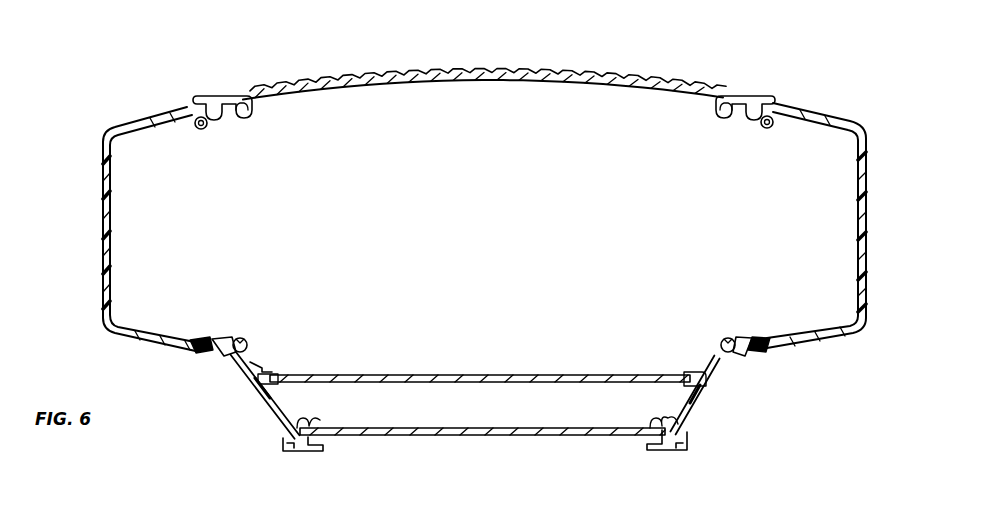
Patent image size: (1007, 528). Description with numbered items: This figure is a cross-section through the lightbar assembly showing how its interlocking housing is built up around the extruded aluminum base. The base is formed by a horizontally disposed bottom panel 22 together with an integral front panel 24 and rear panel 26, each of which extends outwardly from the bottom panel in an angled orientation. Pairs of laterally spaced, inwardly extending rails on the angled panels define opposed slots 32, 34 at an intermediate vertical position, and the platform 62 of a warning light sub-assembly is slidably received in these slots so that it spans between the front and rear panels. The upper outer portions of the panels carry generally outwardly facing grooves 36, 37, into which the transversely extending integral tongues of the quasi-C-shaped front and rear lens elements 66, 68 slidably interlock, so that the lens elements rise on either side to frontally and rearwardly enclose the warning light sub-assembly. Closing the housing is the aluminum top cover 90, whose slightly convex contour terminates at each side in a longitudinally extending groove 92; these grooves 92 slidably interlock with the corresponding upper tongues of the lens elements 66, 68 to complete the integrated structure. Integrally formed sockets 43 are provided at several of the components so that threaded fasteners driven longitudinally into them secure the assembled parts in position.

The bottom panel 22 is at (540, 436).
The front panel 24 is at (700, 403).
The rear panel 26 is at (276, 398).
The slot 32 is at (690, 373).
The slot 34 is at (285, 375).
The groove 36 is at (208, 344).
The groove 37 is at (768, 343).
The socket 43 is at (243, 118).
The platform 62 is at (490, 375).
The front lens element 66 is at (858, 220).
The rear lens element 68 is at (108, 226).
The top cover 90 is at (530, 72).
The groove 92 is at (198, 117).